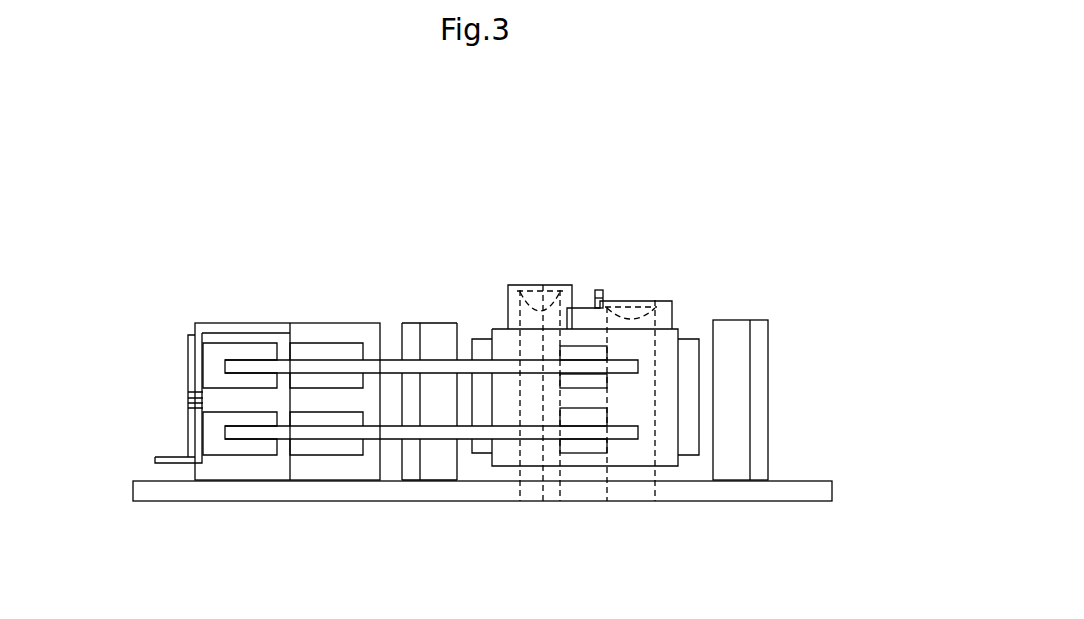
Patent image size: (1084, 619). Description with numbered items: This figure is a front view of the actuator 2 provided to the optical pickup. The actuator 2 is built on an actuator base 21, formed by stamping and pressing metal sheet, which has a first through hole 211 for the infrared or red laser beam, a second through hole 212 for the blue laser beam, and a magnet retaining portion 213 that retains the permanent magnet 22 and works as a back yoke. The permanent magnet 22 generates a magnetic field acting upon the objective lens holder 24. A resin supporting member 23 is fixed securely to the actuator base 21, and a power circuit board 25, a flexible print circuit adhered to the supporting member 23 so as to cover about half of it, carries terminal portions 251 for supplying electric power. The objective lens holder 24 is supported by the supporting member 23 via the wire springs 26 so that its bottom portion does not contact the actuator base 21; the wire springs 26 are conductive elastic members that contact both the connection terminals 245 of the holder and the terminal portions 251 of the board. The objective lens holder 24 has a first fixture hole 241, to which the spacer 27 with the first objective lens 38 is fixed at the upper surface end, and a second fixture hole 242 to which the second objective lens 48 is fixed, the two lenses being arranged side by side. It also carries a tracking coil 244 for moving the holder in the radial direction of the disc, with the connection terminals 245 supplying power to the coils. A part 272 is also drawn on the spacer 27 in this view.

The actuator 2 is at (130, 273).
The actuator base 21 is at (213, 487).
The first through hole 211 is at (615, 492).
The second through hole 212 is at (527, 493).
The magnet retaining portion 213 is at (413, 462).
The permanent magnet 22 is at (430, 328).
The supporting member 23 is at (235, 323).
The objective lens holder 24 is at (670, 340).
The first fixture hole 241 is at (655, 355).
The second fixture hole 242 is at (510, 285).
The tracking coil 244 is at (692, 375).
The connection terminals 245 is at (593, 383).
The power circuit board 25 is at (187, 438).
The terminal portions 251 is at (248, 415).
The wire springs 26 is at (435, 433).
The spacer 27 is at (665, 300).
The pin 272 is at (598, 290).
The first objective lens 38 is at (643, 302).
The second objective lens 48 is at (543, 285).